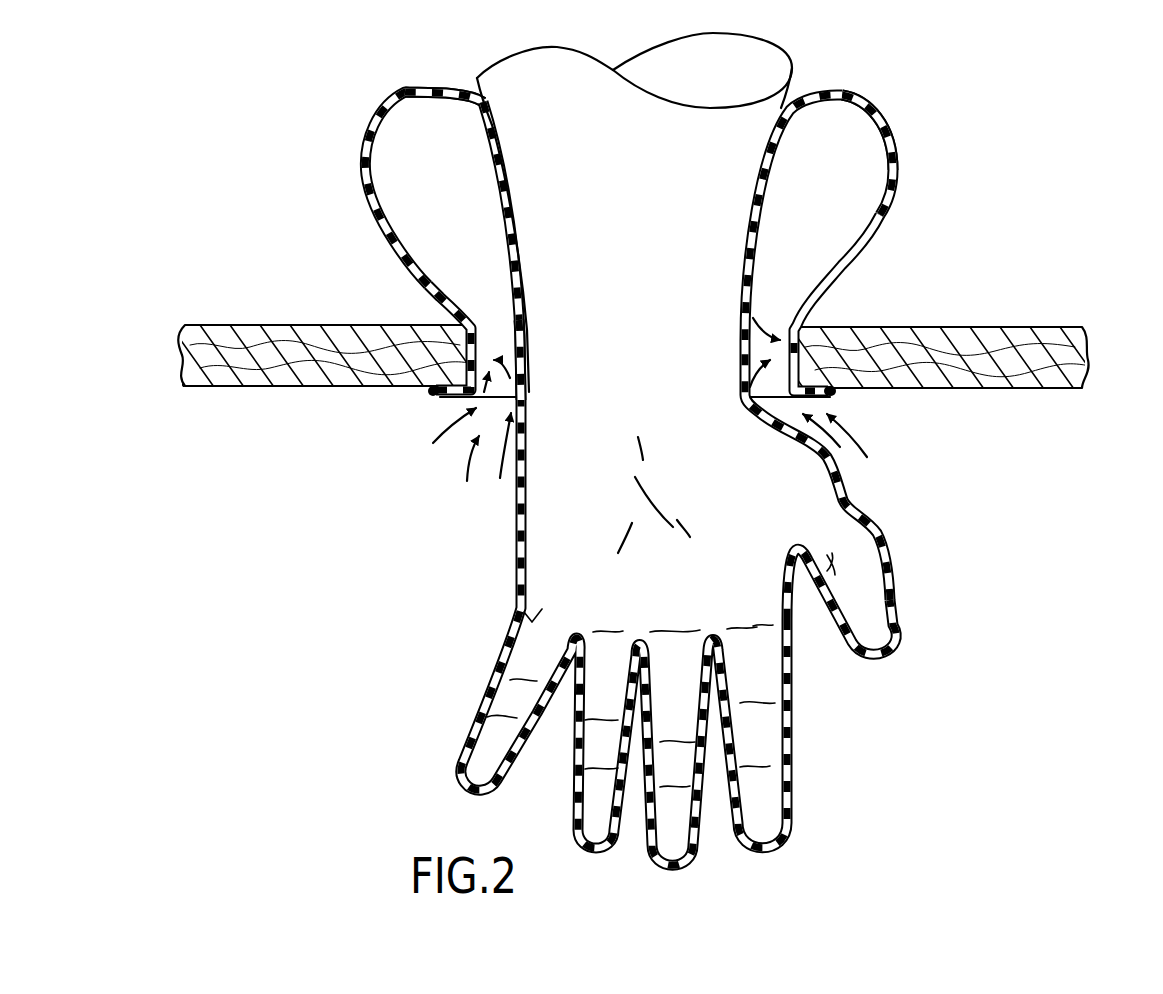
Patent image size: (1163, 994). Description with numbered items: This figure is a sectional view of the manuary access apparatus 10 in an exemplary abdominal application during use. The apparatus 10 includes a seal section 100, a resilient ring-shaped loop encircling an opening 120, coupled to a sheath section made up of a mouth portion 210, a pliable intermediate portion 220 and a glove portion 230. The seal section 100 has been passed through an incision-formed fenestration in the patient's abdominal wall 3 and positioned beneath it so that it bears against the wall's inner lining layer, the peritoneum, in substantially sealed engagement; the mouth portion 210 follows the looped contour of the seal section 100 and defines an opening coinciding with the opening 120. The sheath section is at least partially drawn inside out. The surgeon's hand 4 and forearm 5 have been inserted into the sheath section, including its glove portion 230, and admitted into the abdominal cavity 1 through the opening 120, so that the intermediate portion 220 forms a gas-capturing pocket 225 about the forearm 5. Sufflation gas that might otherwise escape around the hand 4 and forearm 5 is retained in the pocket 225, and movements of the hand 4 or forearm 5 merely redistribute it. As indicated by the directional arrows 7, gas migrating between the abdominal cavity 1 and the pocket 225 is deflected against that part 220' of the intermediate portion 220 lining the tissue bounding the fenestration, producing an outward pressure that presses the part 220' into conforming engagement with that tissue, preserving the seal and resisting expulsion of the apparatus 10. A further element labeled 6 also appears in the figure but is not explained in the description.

The abdominal cavity 1 is at (1043, 477).
The abdominal wall 3 is at (940, 345).
The hand 4 is at (793, 507).
The forearm 5 is at (720, 203).
The air flow 6 is at (415, 487).
The directional arrows 7 is at (485, 342).
The manuary access apparatus 10 is at (893, 108).
The seal section 100 is at (427, 391).
The opening 120 is at (528, 343).
The mouth portion 210 is at (455, 400).
The intermediate portion 220 is at (618, 188).
The part of intermediate portion 220' is at (628, 305).
The gas-capturing pocket 225 is at (392, 133).
The glove portion 230 is at (900, 563).